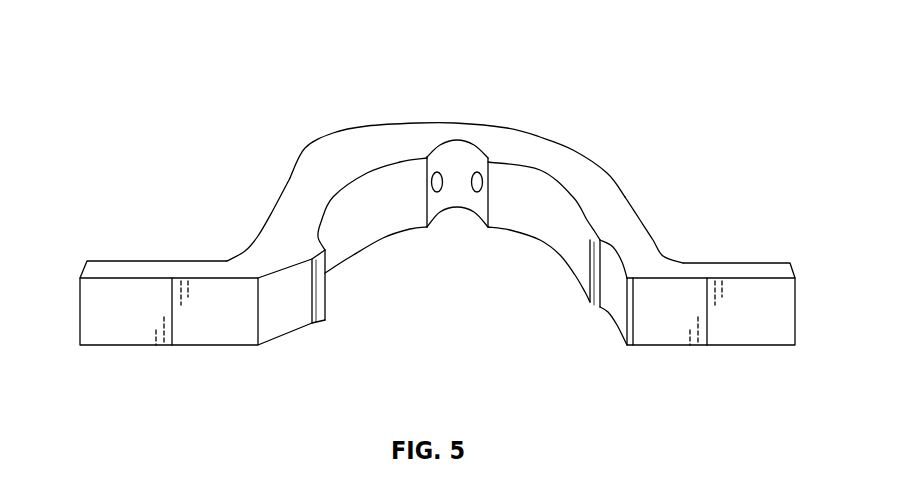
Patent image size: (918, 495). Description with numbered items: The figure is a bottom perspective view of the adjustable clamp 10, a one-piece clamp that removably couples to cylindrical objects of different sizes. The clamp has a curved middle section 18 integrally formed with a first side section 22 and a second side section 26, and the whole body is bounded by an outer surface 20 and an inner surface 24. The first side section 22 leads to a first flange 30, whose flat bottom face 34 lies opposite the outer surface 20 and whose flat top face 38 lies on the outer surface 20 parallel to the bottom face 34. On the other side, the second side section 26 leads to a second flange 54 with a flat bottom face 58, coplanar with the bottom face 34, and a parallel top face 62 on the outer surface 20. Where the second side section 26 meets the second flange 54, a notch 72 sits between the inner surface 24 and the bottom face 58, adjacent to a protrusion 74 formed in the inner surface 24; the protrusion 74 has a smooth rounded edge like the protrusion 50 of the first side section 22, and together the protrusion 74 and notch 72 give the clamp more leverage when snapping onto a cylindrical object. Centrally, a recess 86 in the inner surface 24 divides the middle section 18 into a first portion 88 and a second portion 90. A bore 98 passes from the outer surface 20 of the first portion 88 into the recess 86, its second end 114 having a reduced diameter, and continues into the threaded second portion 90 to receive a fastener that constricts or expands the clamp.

The adjustable clamp 10 is at (156, 50).
The middle section 18 is at (531, 124).
The outer surface 20 is at (583, 118).
The first side section 22 is at (240, 211).
The inner surface 24 is at (519, 244).
The second side section 26 is at (666, 241).
The first flange 30 is at (79, 293).
The bottom face 34 is at (210, 331).
The top face 38 is at (118, 260).
The protrusion 50 is at (318, 300).
The second flange 54 is at (796, 312).
The bottom face 58 is at (738, 331).
The top face 62 is at (744, 262).
The notch 72 is at (615, 310).
The protrusion 74 is at (600, 308).
The recess 86 is at (451, 218).
The first portion 88 is at (294, 155).
The second portion 90 is at (622, 155).
The bore 98 is at (478, 172).
The second end 114 is at (437, 172).